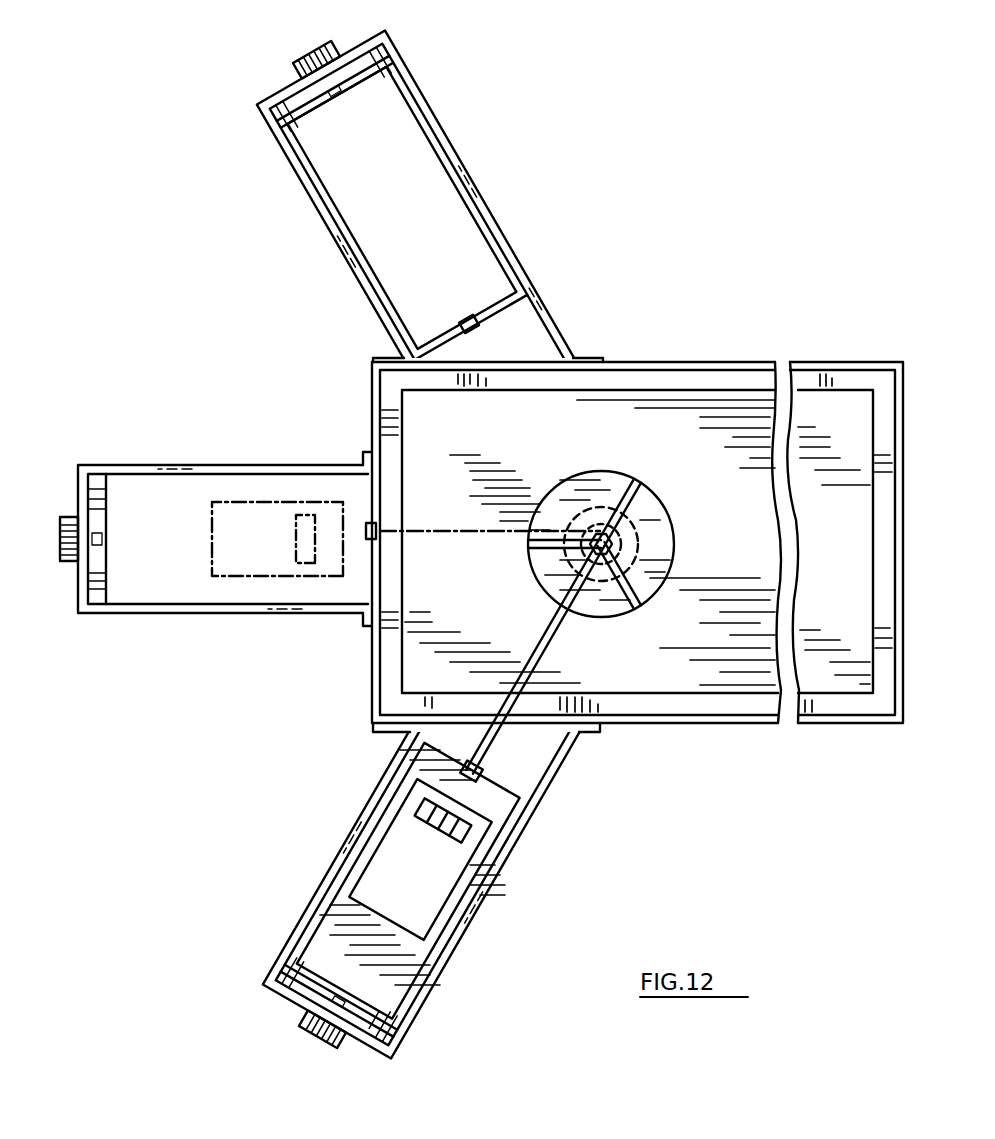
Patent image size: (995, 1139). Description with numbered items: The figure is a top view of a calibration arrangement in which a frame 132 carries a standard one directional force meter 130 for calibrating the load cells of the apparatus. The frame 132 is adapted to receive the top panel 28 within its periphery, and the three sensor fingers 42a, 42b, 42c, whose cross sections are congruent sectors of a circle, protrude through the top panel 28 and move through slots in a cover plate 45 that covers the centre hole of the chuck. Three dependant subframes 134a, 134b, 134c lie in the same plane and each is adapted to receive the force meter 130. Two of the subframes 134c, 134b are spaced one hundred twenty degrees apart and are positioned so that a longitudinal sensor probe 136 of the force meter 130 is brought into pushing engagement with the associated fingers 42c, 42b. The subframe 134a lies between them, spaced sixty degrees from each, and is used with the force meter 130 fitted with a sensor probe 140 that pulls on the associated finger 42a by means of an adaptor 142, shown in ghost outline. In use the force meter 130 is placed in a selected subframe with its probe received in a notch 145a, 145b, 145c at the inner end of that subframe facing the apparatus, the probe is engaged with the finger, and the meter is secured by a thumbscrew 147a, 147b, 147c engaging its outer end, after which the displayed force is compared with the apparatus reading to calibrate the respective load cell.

The top panel 28 is at (685, 405).
The cover plate 45 is at (612, 513).
The sensor finger 42a is at (640, 545).
The sensor finger 42b is at (590, 556).
The sensor finger 42c is at (590, 523).
The one directional force meter 130 is at (326, 891).
The frame 132 is at (637, 551).
The subframe 134a is at (200, 614).
The subframe 134b is at (492, 893).
The subframe 134c is at (513, 238).
The longitudinal sensor probe 136 is at (555, 647).
The sensor probe 140 is at (440, 531).
The adaptor 142 is at (640, 533).
The notch 145a is at (378, 548).
The notch 145b is at (500, 769).
The notch 145c is at (490, 320).
The thumbscrew 147a is at (62, 514).
The thumbscrew 147b is at (330, 1040).
The thumbscrew 147c is at (305, 48).